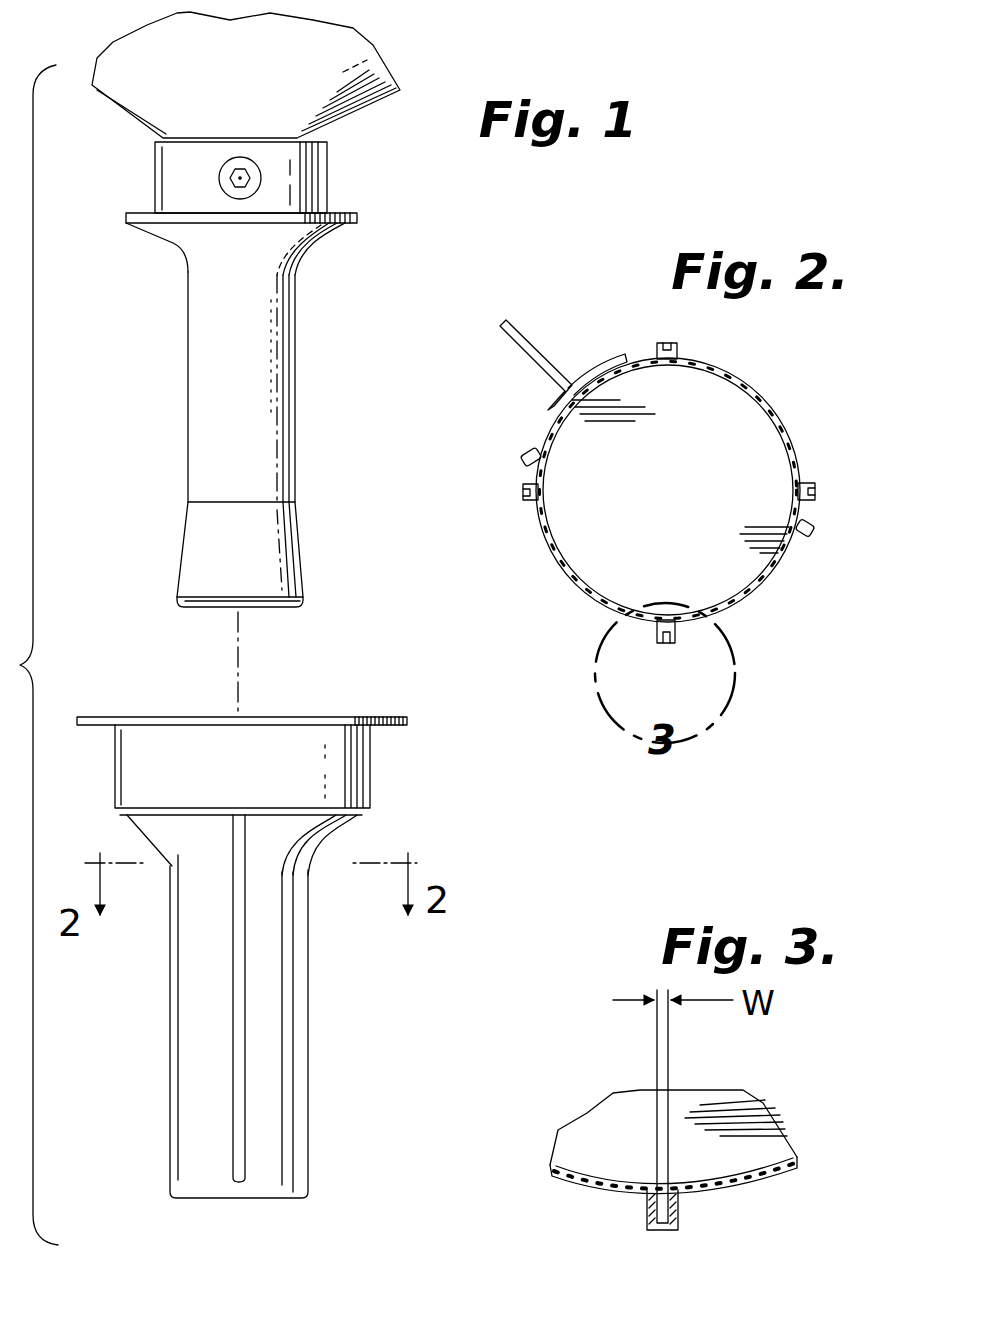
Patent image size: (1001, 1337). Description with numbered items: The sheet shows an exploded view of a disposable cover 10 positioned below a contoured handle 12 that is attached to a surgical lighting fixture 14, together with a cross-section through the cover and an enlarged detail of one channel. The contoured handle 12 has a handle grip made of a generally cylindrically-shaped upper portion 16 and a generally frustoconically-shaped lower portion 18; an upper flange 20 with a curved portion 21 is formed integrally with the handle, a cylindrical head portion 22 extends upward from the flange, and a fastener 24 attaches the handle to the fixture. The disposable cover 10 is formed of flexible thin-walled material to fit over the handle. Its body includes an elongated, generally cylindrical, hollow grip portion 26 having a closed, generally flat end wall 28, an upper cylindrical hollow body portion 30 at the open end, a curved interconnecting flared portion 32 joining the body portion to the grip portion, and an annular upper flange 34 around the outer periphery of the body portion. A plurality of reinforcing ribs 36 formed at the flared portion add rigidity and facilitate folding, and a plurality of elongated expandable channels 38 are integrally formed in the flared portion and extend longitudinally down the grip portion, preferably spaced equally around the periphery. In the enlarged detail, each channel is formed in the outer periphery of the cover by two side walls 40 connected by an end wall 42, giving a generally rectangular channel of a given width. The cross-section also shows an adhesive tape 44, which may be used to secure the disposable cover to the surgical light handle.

In FIG. 1, the disposable cover 10 is at (325, 1065).
In FIG. 1, the contoured handle 12 is at (307, 431).
In FIG. 1, the surgical lighting fixture 14 is at (337, 60).
In FIG. 1, the upper portion 16 is at (227, 415).
In FIG. 1, the lower portion 18 is at (217, 552).
In FIG. 1, the upper flange 20 is at (357, 225).
In FIG. 1, the curved portion 21 is at (173, 243).
In FIG. 1, the cylindrical head portion 22 is at (180, 163).
In FIG. 1, the fastener 24 is at (250, 178).
In FIG. 1, the grip portion 26 is at (267, 963).
In FIG. 2, the grip portion 26 is at (772, 407).
In FIG. 3, the grip portion 26 is at (777, 1173).
In FIG. 1, the end wall 28 is at (257, 1200).
In FIG. 1, the body portion 30 is at (367, 743).
In FIG. 1, the flared portion 32 is at (168, 838).
In FIG. 1, the upper flange 34 is at (378, 717).
In FIG. 1, the reinforcing ribs 36 is at (333, 847).
In FIG. 2, the reinforcing ribs 36 is at (522, 460).
In FIG. 1, the elongated expandable channels 38 is at (170, 1015).
In FIG. 2, the elongated expandable channels 38 is at (668, 369).
In FIG. 3, the elongated expandable channels 38 is at (656, 1185).
In FIG. 3, the side walls 40 is at (647, 1213).
In FIG. 3, the end wall 42 is at (665, 1233).
In FIG. 2, the adhesive tape 44 is at (550, 350).